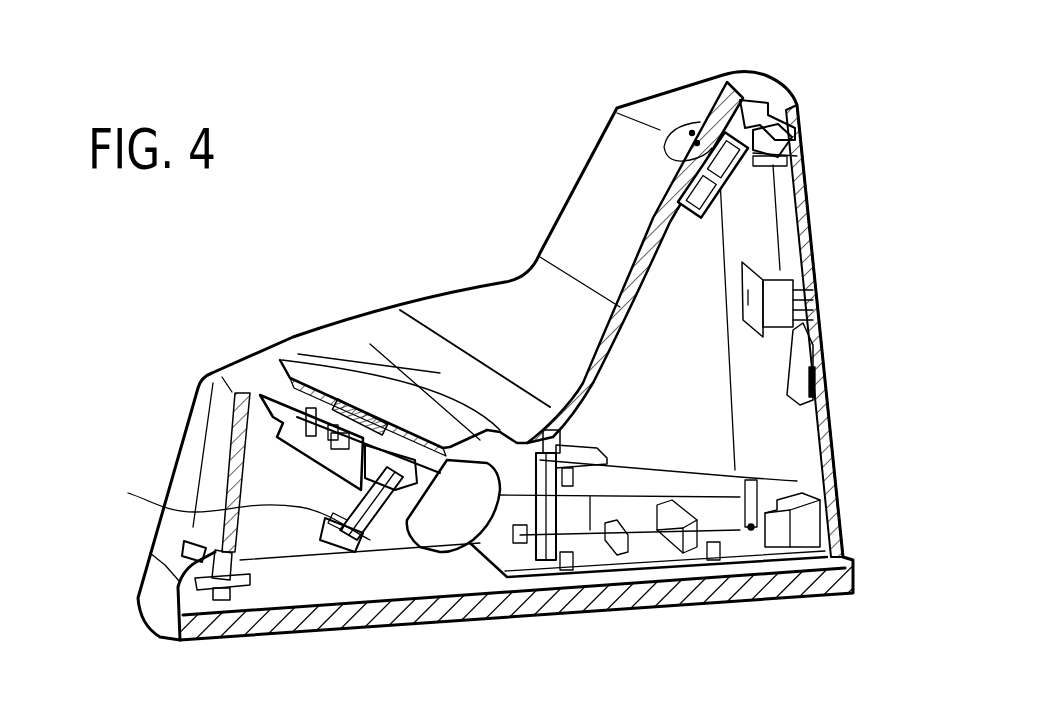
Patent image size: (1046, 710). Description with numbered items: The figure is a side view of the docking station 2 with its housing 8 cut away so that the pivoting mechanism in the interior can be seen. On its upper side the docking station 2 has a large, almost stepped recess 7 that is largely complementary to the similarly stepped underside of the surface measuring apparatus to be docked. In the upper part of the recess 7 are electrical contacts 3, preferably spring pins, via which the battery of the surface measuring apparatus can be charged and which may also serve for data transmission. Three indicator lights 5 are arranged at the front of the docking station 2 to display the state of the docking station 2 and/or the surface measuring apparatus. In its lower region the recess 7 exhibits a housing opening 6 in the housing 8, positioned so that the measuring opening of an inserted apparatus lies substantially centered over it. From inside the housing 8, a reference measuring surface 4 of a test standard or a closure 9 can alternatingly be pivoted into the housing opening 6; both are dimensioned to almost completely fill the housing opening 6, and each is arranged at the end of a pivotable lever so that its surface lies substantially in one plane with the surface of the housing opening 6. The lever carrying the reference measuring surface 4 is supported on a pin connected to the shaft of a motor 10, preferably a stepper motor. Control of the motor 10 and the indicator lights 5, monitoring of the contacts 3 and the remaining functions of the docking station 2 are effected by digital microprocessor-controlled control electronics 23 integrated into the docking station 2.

The docking station 2 is at (333, 240).
The electrical contacts 3 is at (677, 148).
The reference measuring surface 4 is at (367, 407).
The indicator lights 5 is at (187, 543).
The housing opening 6 is at (337, 400).
The recess 7 is at (567, 243).
The housing 8 is at (763, 435).
The closure 9 is at (240, 509).
The motor 10 is at (452, 478).
The control electronics 23 is at (790, 532).